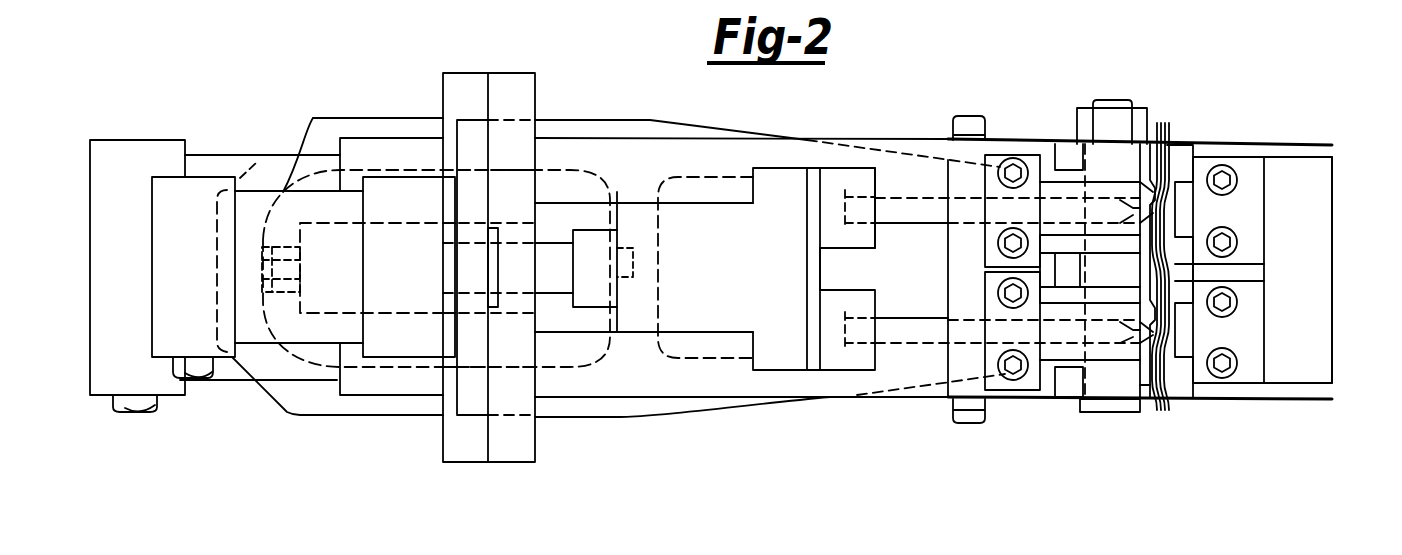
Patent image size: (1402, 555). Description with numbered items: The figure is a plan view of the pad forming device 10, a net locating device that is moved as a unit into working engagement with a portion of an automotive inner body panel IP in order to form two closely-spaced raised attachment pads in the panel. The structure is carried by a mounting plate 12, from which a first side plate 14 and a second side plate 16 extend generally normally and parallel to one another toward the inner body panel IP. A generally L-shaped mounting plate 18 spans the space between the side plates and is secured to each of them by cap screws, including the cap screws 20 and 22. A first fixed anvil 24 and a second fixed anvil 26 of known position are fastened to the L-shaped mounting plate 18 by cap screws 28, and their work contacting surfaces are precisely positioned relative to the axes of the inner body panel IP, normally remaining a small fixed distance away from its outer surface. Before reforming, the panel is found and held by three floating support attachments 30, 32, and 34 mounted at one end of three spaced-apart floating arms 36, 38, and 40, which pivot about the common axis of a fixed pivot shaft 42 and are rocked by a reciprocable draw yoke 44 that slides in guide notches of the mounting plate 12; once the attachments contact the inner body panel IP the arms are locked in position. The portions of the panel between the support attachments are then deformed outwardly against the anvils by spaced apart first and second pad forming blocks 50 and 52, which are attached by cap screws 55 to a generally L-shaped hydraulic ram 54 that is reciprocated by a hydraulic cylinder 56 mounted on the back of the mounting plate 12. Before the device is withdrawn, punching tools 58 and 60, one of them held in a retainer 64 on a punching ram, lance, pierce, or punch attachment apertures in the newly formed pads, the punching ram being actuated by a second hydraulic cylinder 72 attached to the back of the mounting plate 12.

The pad forming device 10 is at (874, 87).
The mounting plate 12 is at (512, 72).
The first side plate 14 is at (673, 138).
The second side plate 16 is at (705, 400).
The L-shaped mounting plate 18 is at (937, 155).
The cap screw 20 is at (966, 115).
The cap screw 22 is at (963, 427).
The first fixed anvil 24 is at (1112, 173).
The second fixed anvil 26 is at (1107, 362).
The cap screws 28 is at (1012, 230).
The floating support attachment 30 is at (1147, 158).
The floating support attachment 32 is at (1143, 273).
The floating support attachment 34 is at (1148, 400).
The floating arm 36 is at (1067, 153).
The floating arm 38 is at (1072, 393).
The floating arm 40 is at (1063, 280).
The fixed pivot shaft 42 is at (1118, 412).
The reciprocable draw yoke 44 is at (600, 120).
The first pad forming block 50 is at (1258, 157).
The second pad forming block 52 is at (1253, 373).
The hydraulic ram 54 is at (1333, 237).
The cap screws 55 is at (1236, 236).
The hydraulic cylinder 56 is at (212, 155).
The punching tool 58 is at (923, 224).
The punching tool 60 is at (913, 322).
The retainer 64 is at (877, 185).
The hydraulic cylinder 72 is at (265, 155).
The inner body panel IP is at (1160, 128).